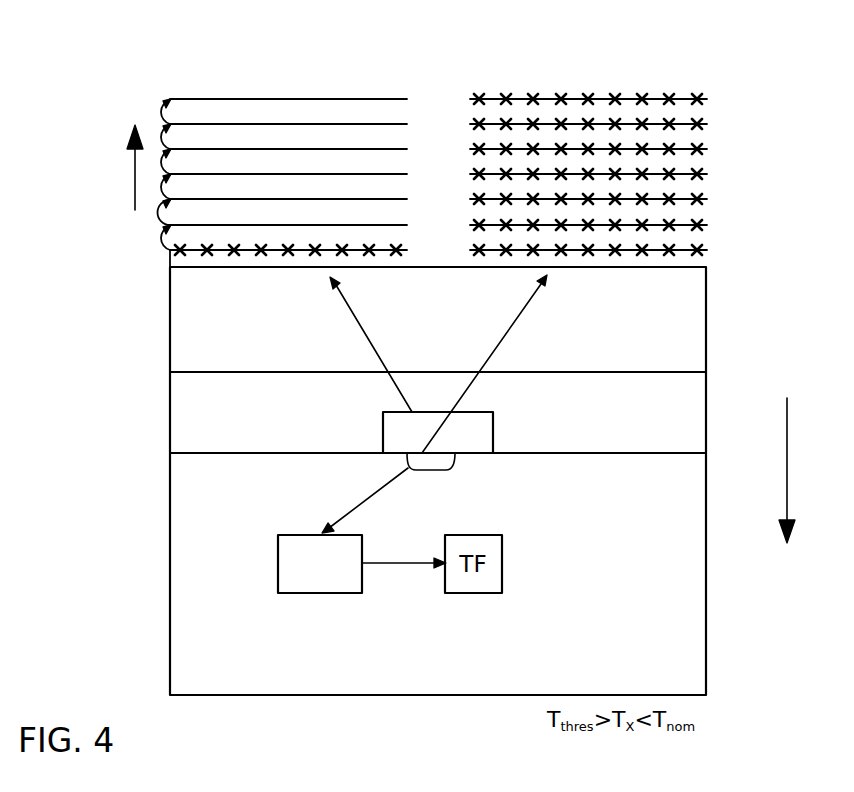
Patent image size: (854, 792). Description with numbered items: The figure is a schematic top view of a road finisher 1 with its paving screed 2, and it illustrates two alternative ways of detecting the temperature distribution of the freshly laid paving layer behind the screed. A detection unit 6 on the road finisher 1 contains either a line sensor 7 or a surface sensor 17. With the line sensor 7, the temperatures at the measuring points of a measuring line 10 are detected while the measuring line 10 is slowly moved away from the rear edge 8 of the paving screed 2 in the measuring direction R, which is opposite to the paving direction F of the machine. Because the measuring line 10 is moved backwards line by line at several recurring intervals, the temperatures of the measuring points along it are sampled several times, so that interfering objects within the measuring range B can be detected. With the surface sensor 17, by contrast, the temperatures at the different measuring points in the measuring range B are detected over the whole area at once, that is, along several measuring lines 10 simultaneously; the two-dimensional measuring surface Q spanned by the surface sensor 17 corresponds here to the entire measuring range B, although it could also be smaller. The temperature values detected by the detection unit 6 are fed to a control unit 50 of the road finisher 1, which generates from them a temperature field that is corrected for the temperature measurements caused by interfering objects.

The road finisher 1 is at (687, 690).
The paving screed 2 is at (685, 365).
The detection unit 6 is at (372, 425).
The line sensor 7 is at (404, 448).
The surface sensor 17 is at (453, 448).
The control unit 50 is at (305, 580).
The rear edge 8 is at (170, 267).
The measuring line 10 is at (169, 257).
The measuring range B is at (238, 120).
The measuring surface Q is at (568, 114).
The measuring direction R is at (125, 167).
The paving direction F is at (798, 470).